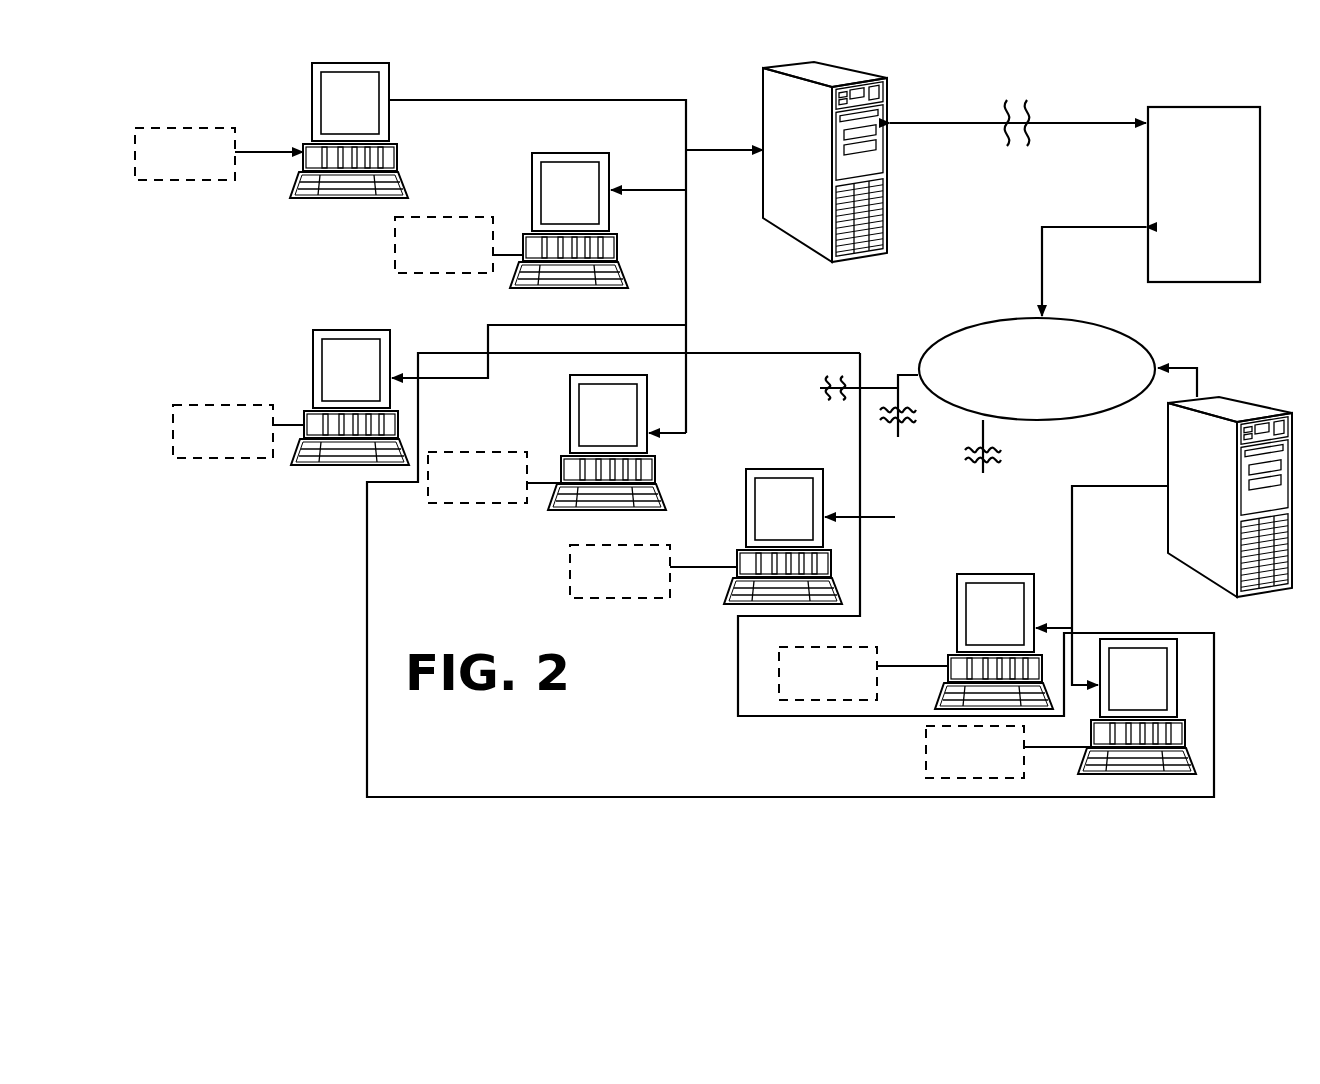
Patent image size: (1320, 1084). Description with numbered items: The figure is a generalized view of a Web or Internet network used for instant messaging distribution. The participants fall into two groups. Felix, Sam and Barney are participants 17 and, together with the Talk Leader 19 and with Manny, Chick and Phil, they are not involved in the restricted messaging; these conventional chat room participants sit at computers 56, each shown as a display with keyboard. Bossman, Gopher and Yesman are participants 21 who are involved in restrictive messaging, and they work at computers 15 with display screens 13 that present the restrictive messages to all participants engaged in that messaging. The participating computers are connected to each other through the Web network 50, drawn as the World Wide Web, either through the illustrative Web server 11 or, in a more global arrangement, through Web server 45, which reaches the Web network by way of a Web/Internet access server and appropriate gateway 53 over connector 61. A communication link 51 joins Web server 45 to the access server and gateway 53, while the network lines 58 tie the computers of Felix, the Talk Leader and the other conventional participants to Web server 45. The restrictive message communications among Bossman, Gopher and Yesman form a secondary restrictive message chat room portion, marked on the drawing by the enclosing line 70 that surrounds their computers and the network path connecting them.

The Web server 11 is at (398, 177).
The display screen 13 is at (588, 278).
The computer 15 is at (746, 519).
The participant 17 is at (197, 181).
The Talk Leader 19 is at (395, 255).
The participant 21 is at (485, 505).
The Web server 45 is at (792, 107).
The Web network 50 is at (970, 327).
The communication link 51 is at (1085, 122).
The Web/Internet access server and gateway 53 is at (1215, 268).
The computer 56 is at (344, 86).
The local network 58 is at (686, 303).
The connector 61 is at (1042, 265).
The enclosing line 70 is at (470, 798).